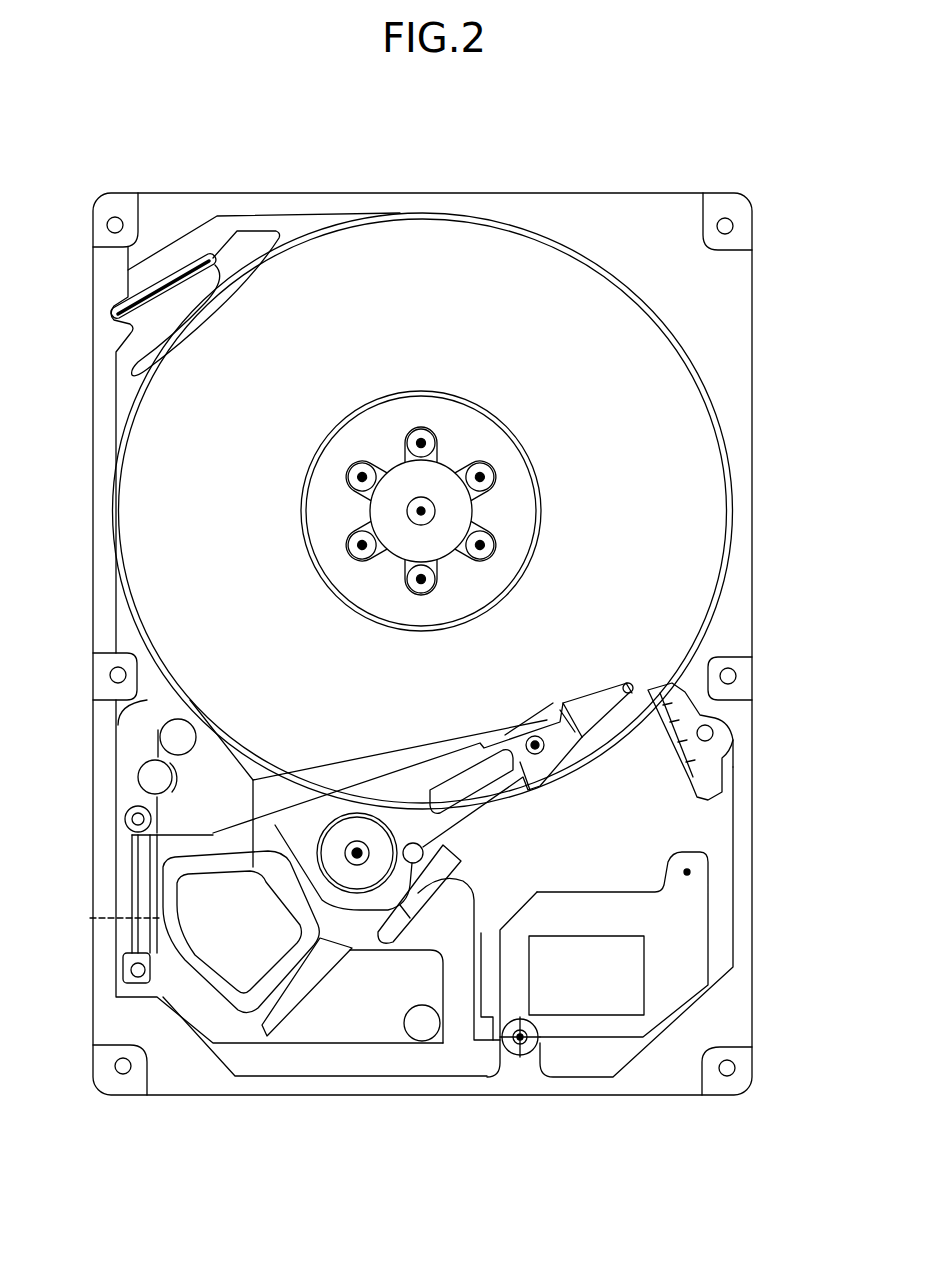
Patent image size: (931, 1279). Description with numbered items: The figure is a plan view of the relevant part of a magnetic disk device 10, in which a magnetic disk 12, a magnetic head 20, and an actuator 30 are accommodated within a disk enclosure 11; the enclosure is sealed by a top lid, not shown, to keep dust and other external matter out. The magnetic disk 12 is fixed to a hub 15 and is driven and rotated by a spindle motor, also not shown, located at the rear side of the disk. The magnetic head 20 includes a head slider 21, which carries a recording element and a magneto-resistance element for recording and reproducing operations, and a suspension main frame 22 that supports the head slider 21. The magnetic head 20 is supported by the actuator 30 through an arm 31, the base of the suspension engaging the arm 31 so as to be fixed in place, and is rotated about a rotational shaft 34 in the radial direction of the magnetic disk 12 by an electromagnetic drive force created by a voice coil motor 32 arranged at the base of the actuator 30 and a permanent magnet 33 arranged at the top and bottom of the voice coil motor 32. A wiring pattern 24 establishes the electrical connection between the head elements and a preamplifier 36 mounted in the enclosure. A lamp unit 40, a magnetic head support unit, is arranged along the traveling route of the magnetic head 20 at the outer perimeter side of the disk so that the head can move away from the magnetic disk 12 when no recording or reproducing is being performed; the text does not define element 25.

The magnetic disk device 10 is at (86, 177).
The disk enclosure 11 is at (753, 393).
The magnetic disk 12 is at (520, 270).
The hub 15 is at (482, 440).
The magnetic head 20 is at (597, 666).
The head slider 21 is at (628, 682).
The suspension main frame 22 is at (590, 712).
The wiring pattern 24 is at (465, 935).
The head element 25 is at (634, 684).
The actuator 30 is at (396, 760).
The arm 31 is at (430, 777).
The voice coil motor 32 is at (223, 1007).
The permanent magnet 33 is at (360, 1043).
The rotational shaft 34 is at (348, 832).
The preamplifier 36 is at (646, 964).
The lamp unit 40 is at (733, 760).